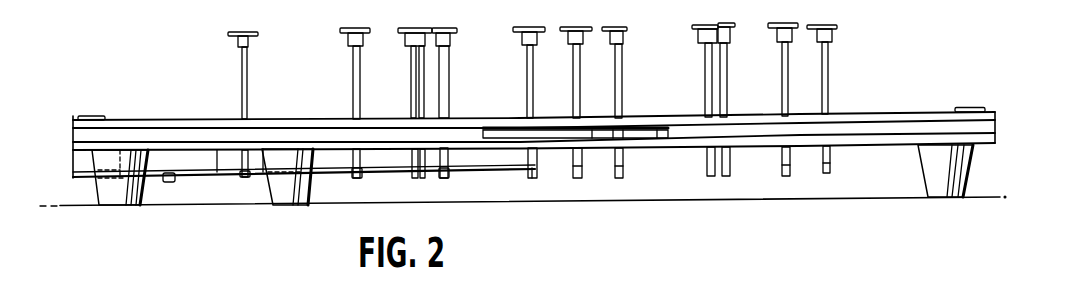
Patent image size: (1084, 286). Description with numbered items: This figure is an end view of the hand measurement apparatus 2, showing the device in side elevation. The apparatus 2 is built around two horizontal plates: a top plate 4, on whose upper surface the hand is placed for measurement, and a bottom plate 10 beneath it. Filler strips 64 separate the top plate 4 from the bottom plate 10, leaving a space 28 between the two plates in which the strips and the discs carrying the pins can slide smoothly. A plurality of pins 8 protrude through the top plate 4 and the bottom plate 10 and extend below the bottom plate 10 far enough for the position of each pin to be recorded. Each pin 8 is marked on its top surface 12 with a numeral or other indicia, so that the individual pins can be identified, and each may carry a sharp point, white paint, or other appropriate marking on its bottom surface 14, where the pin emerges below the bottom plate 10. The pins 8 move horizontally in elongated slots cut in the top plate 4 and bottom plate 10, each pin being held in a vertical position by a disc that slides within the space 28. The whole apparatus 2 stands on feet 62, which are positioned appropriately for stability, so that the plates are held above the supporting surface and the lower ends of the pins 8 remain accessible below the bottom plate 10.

The hand measurement apparatus 2 is at (930, 106).
The top plate 4 is at (862, 118).
The pins 8 is at (622, 63).
The bottom plate 10 is at (858, 140).
The top surface 12 is at (628, 27).
The bottom surface 14 is at (623, 176).
The space 28 is at (635, 132).
The feet 62 is at (112, 190).
The filler strips 64 is at (167, 138).